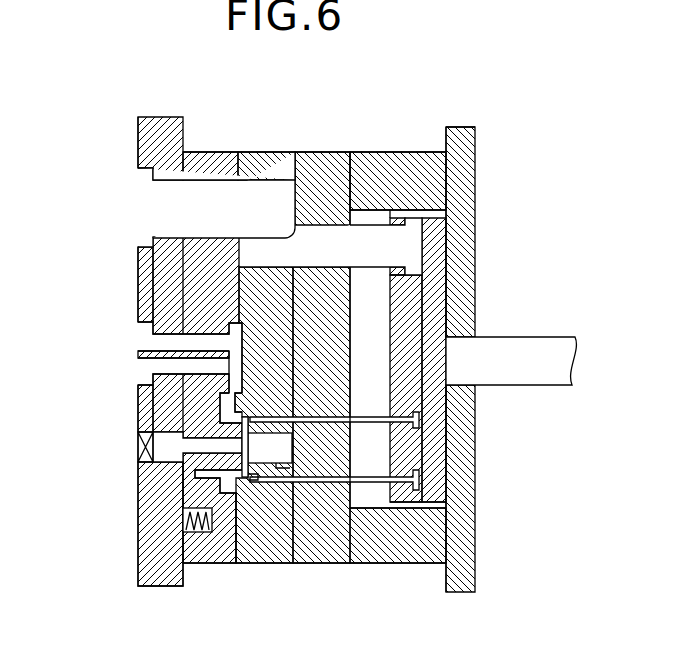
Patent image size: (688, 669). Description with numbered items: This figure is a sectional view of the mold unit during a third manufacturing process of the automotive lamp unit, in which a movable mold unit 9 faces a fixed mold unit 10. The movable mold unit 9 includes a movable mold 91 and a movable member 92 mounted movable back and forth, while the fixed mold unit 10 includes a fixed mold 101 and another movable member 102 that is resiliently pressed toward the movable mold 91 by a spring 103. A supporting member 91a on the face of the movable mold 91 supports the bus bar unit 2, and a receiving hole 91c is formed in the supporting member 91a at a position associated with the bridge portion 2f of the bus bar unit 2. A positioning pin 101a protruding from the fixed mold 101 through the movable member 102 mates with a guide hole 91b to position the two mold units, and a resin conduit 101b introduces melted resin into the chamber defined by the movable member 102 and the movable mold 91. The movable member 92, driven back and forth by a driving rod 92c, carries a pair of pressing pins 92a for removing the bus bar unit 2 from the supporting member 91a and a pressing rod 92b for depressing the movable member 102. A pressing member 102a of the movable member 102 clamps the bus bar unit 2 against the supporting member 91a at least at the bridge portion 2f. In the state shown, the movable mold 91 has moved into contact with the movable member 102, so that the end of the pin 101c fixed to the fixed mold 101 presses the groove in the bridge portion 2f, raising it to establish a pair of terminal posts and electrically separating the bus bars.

The bus bar unit 2 is at (246, 480).
The bridge portion 2f is at (258, 480).
The movable mold unit 9 is at (425, 138).
The fixed mold unit 10 is at (115, 150).
The movable mold 91 is at (337, 163).
The supporting member 91a is at (282, 468).
The guide hole 91b is at (268, 190).
The receiving hole 91c is at (280, 450).
The movable member 92 is at (430, 297).
The pressing pins 92a is at (365, 420).
The pressing rod 92b is at (410, 250).
The driving rod 92c is at (525, 357).
The fixed mold 101 is at (145, 528).
The positioning pin 101a is at (148, 210).
The resin conduit 101b is at (138, 330).
The pin 101c is at (187, 447).
The movable member 102 is at (208, 152).
The pressing member 102a is at (200, 425).
The spring 103 is at (202, 533).